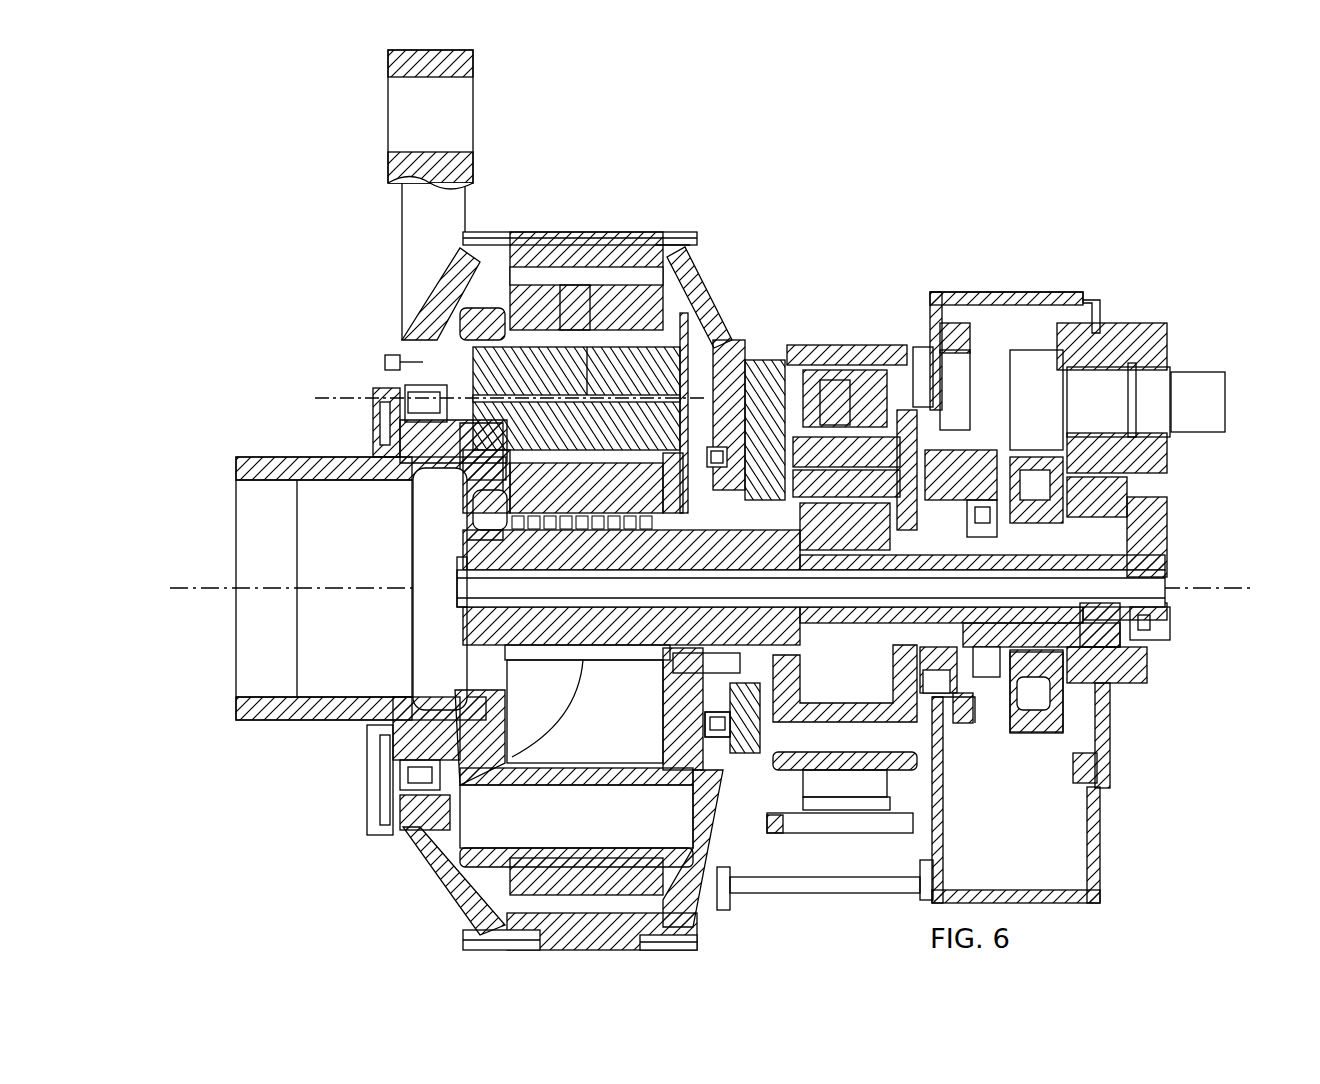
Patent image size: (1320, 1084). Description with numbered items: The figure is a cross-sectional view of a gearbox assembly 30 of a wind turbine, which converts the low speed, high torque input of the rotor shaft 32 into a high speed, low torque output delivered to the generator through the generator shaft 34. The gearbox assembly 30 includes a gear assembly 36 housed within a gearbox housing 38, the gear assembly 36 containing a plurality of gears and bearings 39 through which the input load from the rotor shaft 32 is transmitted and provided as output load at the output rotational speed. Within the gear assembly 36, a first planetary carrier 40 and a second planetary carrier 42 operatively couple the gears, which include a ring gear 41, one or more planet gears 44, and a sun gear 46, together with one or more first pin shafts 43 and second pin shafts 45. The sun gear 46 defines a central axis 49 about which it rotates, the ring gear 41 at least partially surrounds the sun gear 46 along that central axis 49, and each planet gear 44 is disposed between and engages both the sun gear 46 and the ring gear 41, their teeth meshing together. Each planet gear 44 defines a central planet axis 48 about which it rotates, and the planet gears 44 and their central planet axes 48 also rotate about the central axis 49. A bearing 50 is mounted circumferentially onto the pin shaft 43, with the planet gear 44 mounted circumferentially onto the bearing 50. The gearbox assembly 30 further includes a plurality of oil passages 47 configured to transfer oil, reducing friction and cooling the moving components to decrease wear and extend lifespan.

The gearbox assembly 30 is at (1188, 238).
The rotor shaft 32 is at (236, 535).
The generator shaft 34 is at (1200, 375).
The gear assembly 36 is at (500, 280).
The gearbox housing 38 is at (1040, 292).
The bearings 39 is at (712, 412).
The first planetary carrier 40 is at (292, 455).
The ring gear 41 is at (620, 280).
The second planetary carrier 42 is at (772, 410).
The first pin shaft 43 is at (515, 390).
The planet gear 44 is at (584, 300).
The second pin shaft 45 is at (857, 433).
The sun gear 46 is at (462, 805).
The oil passages 47 is at (505, 360).
The central planet axis 48 is at (340, 397).
The central axis 49 is at (200, 592).
The bearing 50 is at (570, 330).